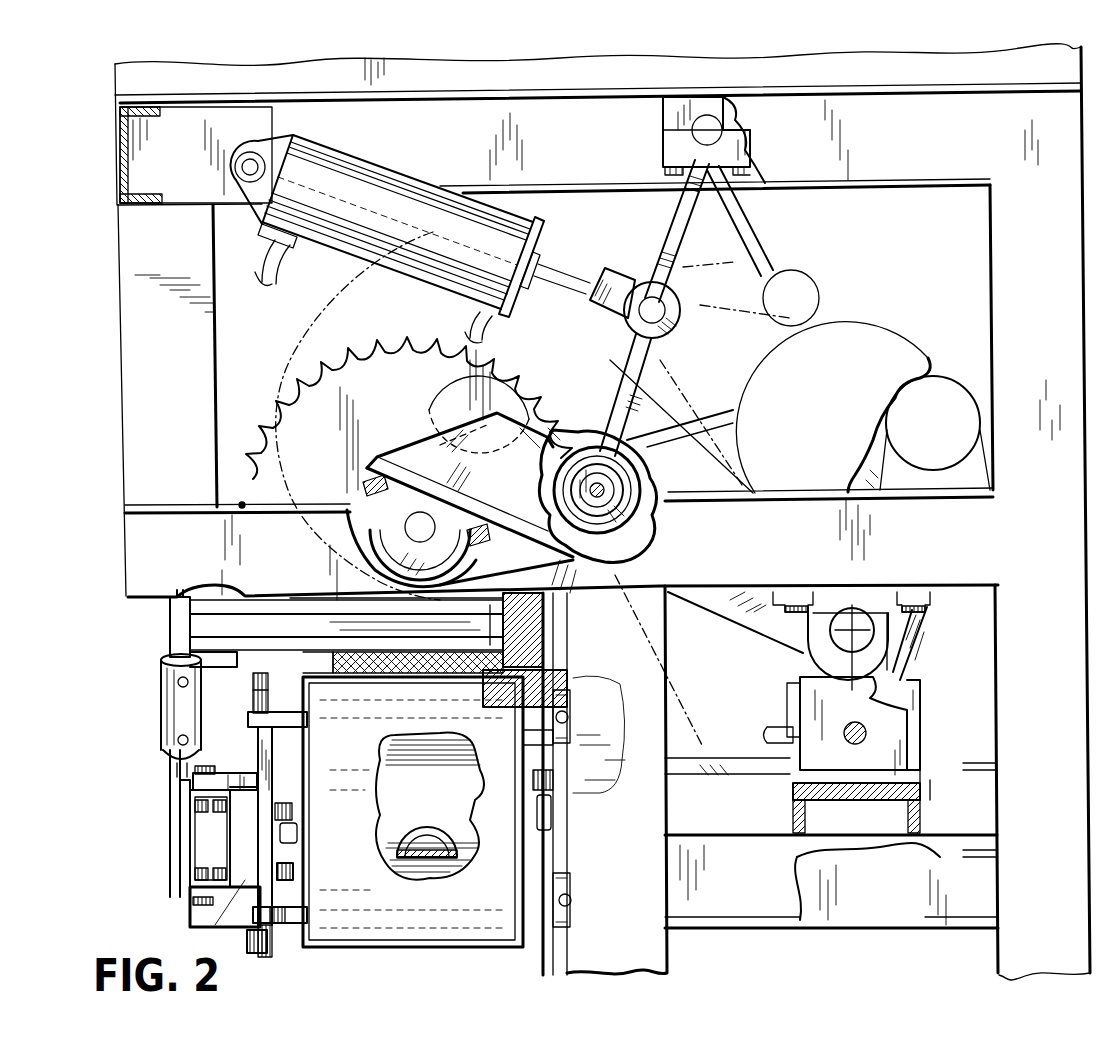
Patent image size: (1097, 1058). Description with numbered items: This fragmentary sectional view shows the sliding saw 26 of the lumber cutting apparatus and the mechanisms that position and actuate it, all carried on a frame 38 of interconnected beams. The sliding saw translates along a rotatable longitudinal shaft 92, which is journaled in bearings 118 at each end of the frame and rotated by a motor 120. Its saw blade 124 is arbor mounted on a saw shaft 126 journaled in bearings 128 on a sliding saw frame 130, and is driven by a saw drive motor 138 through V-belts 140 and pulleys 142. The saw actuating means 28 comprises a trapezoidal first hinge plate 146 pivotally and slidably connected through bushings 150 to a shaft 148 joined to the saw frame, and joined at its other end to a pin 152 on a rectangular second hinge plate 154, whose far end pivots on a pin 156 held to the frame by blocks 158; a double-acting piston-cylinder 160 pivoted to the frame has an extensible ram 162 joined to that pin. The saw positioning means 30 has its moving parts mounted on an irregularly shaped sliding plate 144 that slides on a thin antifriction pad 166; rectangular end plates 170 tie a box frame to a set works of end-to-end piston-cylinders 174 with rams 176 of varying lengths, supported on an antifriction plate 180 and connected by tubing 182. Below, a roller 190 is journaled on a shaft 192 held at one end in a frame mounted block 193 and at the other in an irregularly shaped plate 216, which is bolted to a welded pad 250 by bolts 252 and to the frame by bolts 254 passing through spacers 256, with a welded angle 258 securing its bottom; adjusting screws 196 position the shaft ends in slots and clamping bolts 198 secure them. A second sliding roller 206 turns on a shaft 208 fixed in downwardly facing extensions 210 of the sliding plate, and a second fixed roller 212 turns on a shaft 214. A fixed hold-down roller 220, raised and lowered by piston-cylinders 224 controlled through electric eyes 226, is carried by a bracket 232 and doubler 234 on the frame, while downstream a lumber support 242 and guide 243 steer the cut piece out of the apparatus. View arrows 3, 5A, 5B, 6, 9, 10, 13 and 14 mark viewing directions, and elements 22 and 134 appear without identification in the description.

The section line 3 is at (330, 577).
The view direction 5A is at (92, 640).
The view direction 5B is at (532, 681).
The view direction 6 is at (247, 662).
The view direction 9 is at (550, 877).
The view direction 10 / machine 10 is at (747, 67).
The view direction 13 is at (283, 352).
The view direction 14 is at (603, 466).
The cross member 22 is at (400, 673).
The sliding saw 26 is at (338, 362).
The saw actuating means 28 is at (693, 240).
The saw positioning means 30 is at (928, 697).
The frame 38 is at (120, 173).
The rotatable longitudinal shaft 92 is at (818, 660).
The bearings 118 is at (918, 598).
The motor 120 is at (947, 390).
The saw blade 124 is at (400, 350).
The saw shaft 126 is at (418, 515).
The bearings 128 is at (453, 523).
The sliding saw frame 130 is at (410, 450).
The guide bracket 134 is at (840, 623).
The saw drive motor 138 is at (866, 340).
The V-belts 140 is at (735, 447).
The pulleys 142 is at (380, 503).
The sliding plate 144 is at (720, 767).
The first hinge plate 146 is at (627, 390).
The shaft 148 is at (587, 497).
The bushings 150 is at (557, 473).
The pin 152 is at (680, 316).
The second hinge plate 154 is at (676, 222).
The pin 156 is at (698, 135).
The blocks 158 is at (673, 118).
The double-acting fluid operated piston-cylinder 160 is at (387, 239).
The extensible ram 162 is at (552, 278).
The thin antifriction pad 166 is at (228, 769).
The rectangular end plates 170 is at (800, 700).
The double-acting fluid operated piston-cylinders 174 is at (813, 773).
The rams 176 is at (845, 732).
The antifriction plate 180 is at (922, 790).
The tubing 182 is at (397, 860).
The roller 190 is at (440, 870).
The shaft 192 is at (250, 942).
The frame mounted block 193 is at (567, 697).
The adjusting screws 196 is at (567, 721).
The clamping bolts 198 is at (253, 700).
The second sliding roller 206 is at (413, 835).
The shaft 208 is at (295, 808).
The downwardly facing extensions 210 is at (297, 830).
The second fixed roller 212 is at (433, 743).
The shaft 214 is at (307, 720).
The irregularly shaped plate 216 is at (258, 743).
The fixed hold-down roller 220 is at (363, 606).
The double-acting fluid operated piston-cylinders 224 is at (163, 706).
The electric eyes 226 is at (203, 665).
The bracket 232 is at (183, 593).
The doubler 234 is at (185, 590).
The lumber support 242 is at (503, 707).
The guide 243 is at (545, 628).
The pad 250 is at (283, 892).
The bolts 252 is at (293, 872).
The bolts 254 is at (217, 815).
The spacers 256 is at (247, 878).
The angle 258 is at (197, 916).